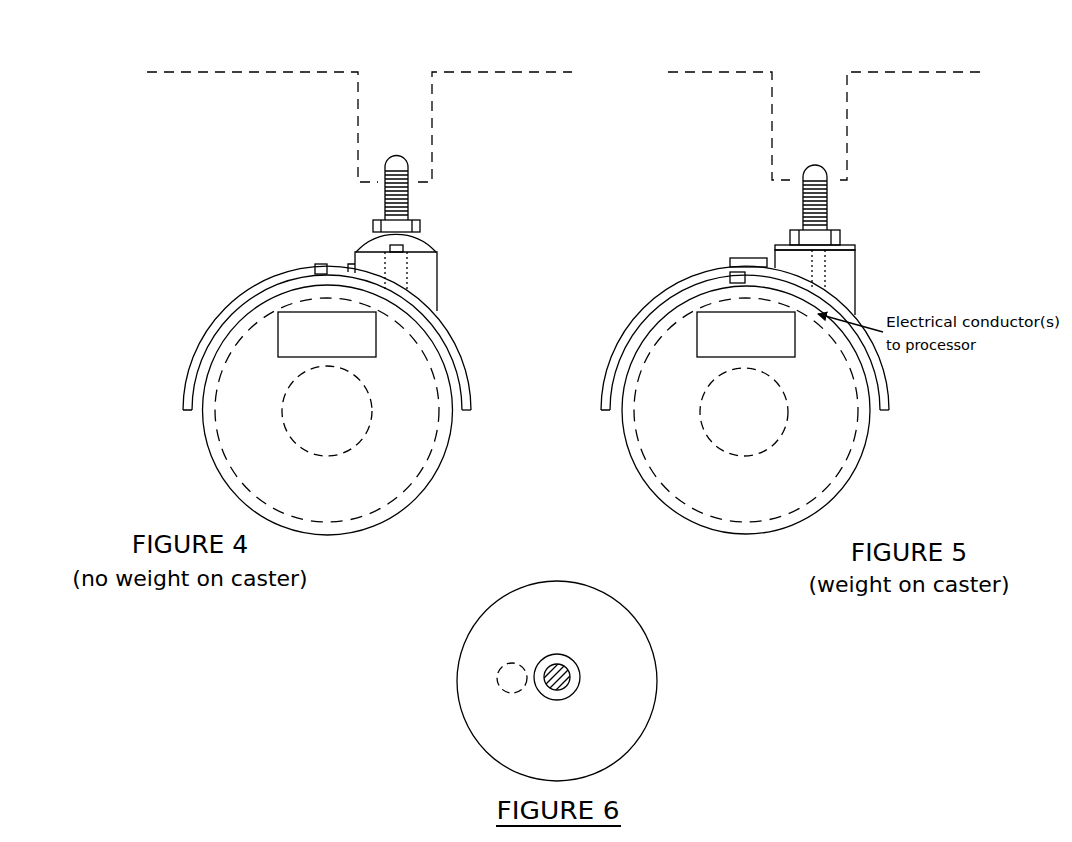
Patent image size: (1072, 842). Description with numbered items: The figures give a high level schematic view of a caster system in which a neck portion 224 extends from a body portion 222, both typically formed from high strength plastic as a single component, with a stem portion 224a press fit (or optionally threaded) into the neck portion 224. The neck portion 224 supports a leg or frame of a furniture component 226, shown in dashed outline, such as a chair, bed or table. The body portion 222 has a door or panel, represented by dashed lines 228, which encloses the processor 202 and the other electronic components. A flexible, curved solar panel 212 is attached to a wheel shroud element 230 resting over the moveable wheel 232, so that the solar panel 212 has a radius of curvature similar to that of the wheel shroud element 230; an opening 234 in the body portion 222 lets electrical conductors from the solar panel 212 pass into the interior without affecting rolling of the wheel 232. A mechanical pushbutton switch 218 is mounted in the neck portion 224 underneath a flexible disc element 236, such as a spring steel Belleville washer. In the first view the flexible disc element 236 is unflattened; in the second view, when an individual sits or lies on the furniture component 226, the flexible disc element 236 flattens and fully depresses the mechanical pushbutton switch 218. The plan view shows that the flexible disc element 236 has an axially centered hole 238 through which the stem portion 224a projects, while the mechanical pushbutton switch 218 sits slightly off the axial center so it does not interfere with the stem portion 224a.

In FIG. 4, the processor 202 is at (315, 353).
In FIG. 5, the processor 202 is at (746, 334).
In FIG. 4, the solar panel 212 is at (268, 270).
In FIG. 5, the solar panel 212 is at (745, 292).
In FIG. 4, the mechanical pushbutton switch 218 is at (404, 254).
In FIG. 5, the mechanical pushbutton switch 218 is at (942, 269).
In FIG. 6, the mechanical pushbutton switch 218 is at (498, 668).
In FIG. 5, the body portion 222 is at (903, 435).
In FIG. 4, the neck portion 224 is at (425, 293).
In FIG. 5, the neck portion 224 is at (899, 282).
In FIG. 4, the stem portion 224a is at (388, 202).
In FIG. 5, the stem portion 224a is at (745, 198).
In FIG. 6, the stem portion 224a is at (545, 672).
In FIG. 4, the furniture component 226 is at (215, 72).
In FIG. 5, the furniture component 226 is at (796, 100).
In FIG. 4, the door or panel 228 is at (220, 444).
In FIG. 5, the door or panel 228 is at (709, 410).
In FIG. 4, the wheel shroud element 230 is at (469, 396).
In FIG. 5, the wheel shroud element 230 is at (929, 408).
In FIG. 4, the wheel 232 is at (418, 497).
In FIG. 5, the wheel 232 is at (798, 410).
In FIG. 4, the opening 234 is at (320, 268).
In FIG. 5, the opening 234 is at (703, 259).
In FIG. 4, the flexible disc element 236 is at (433, 239).
In FIG. 5, the flexible disc element 236 is at (922, 193).
In FIG. 6, the flexible disc element 236 is at (642, 715).
In FIG. 6, the axially centered hole 238 is at (580, 677).